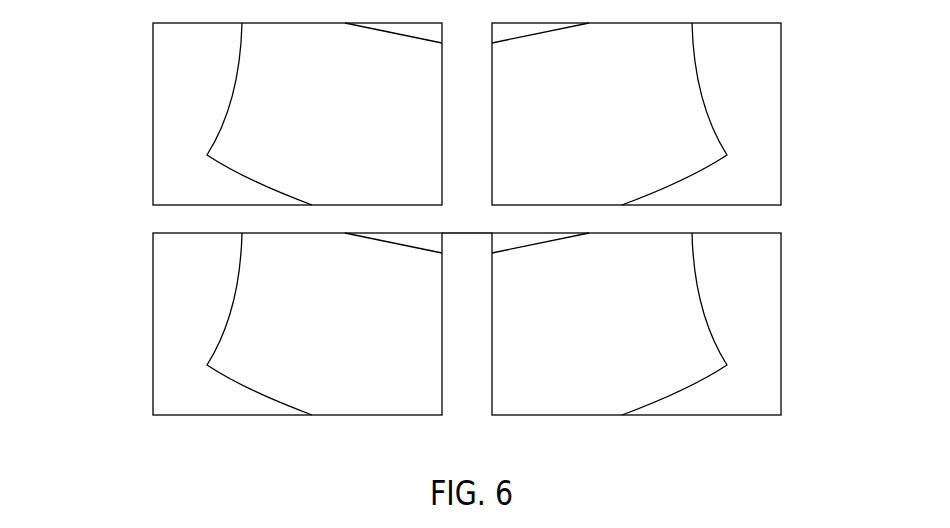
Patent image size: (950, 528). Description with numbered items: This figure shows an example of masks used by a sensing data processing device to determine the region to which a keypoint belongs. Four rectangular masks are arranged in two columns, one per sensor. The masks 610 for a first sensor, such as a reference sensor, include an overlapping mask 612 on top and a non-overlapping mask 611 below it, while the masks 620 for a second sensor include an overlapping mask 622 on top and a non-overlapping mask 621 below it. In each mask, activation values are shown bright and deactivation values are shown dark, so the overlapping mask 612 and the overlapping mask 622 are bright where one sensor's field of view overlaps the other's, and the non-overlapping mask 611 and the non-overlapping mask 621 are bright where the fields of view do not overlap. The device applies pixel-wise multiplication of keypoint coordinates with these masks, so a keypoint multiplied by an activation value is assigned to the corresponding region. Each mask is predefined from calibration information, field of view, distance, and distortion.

The masks for a first sensor 610 is at (224, 219).
The non-overlapping mask 611 is at (254, 324).
The overlapping mask 612 is at (137, 111).
The masks for a second sensor 620 is at (710, 219).
The non-overlapping mask 621 is at (681, 324).
The overlapping mask 622 is at (800, 111).